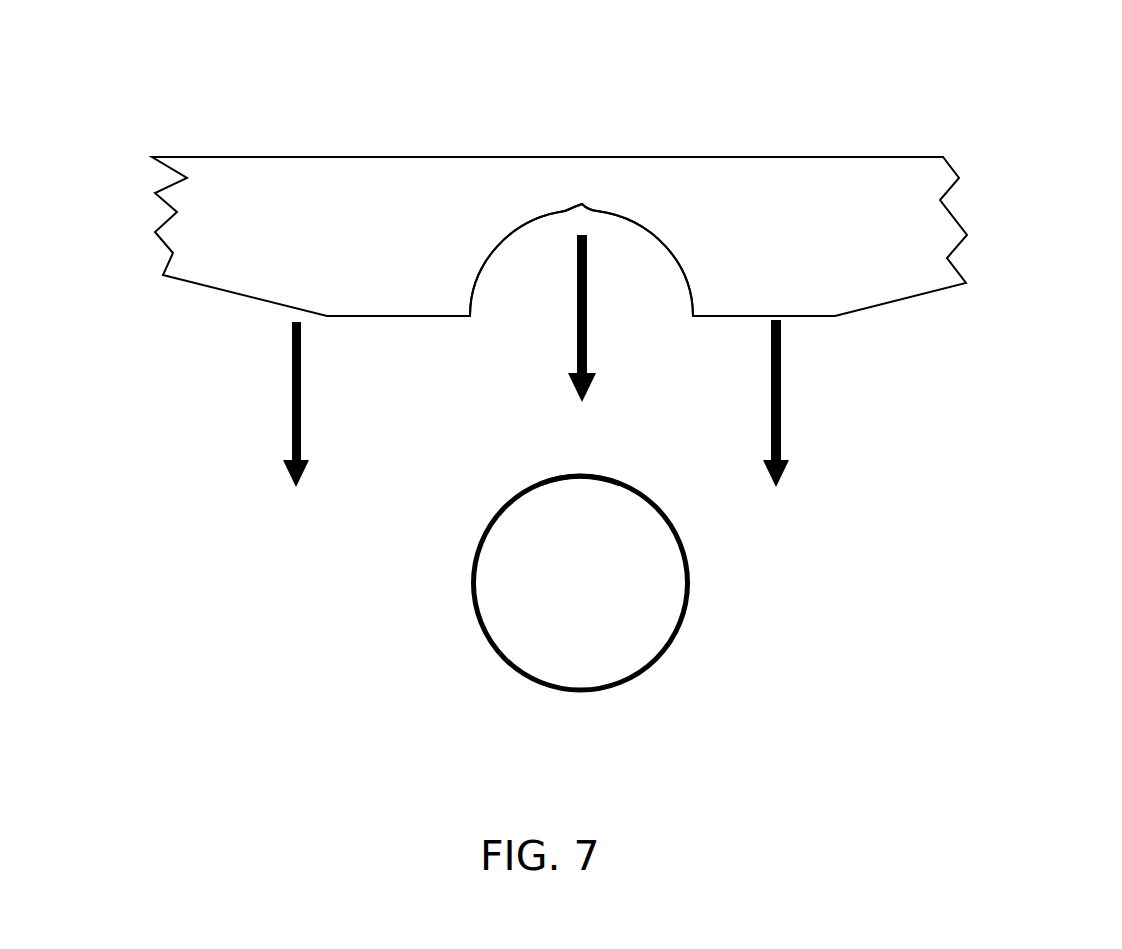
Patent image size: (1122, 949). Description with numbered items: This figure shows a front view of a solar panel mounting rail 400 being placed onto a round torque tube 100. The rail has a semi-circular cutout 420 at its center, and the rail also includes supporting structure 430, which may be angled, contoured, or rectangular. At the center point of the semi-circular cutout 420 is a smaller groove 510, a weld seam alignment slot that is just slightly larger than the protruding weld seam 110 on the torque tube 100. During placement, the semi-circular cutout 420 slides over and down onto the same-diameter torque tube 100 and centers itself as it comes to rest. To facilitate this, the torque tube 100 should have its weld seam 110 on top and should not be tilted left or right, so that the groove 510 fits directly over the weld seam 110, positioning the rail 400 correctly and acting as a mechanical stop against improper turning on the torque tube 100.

The solar panel mounting rail 400 is at (208, 147).
The supporting structure 430 is at (785, 157).
The semi-circular cutout 420 is at (647, 237).
The groove 510 is at (580, 205).
The torque tube 100 is at (482, 630).
The weld seam 110 is at (583, 478).